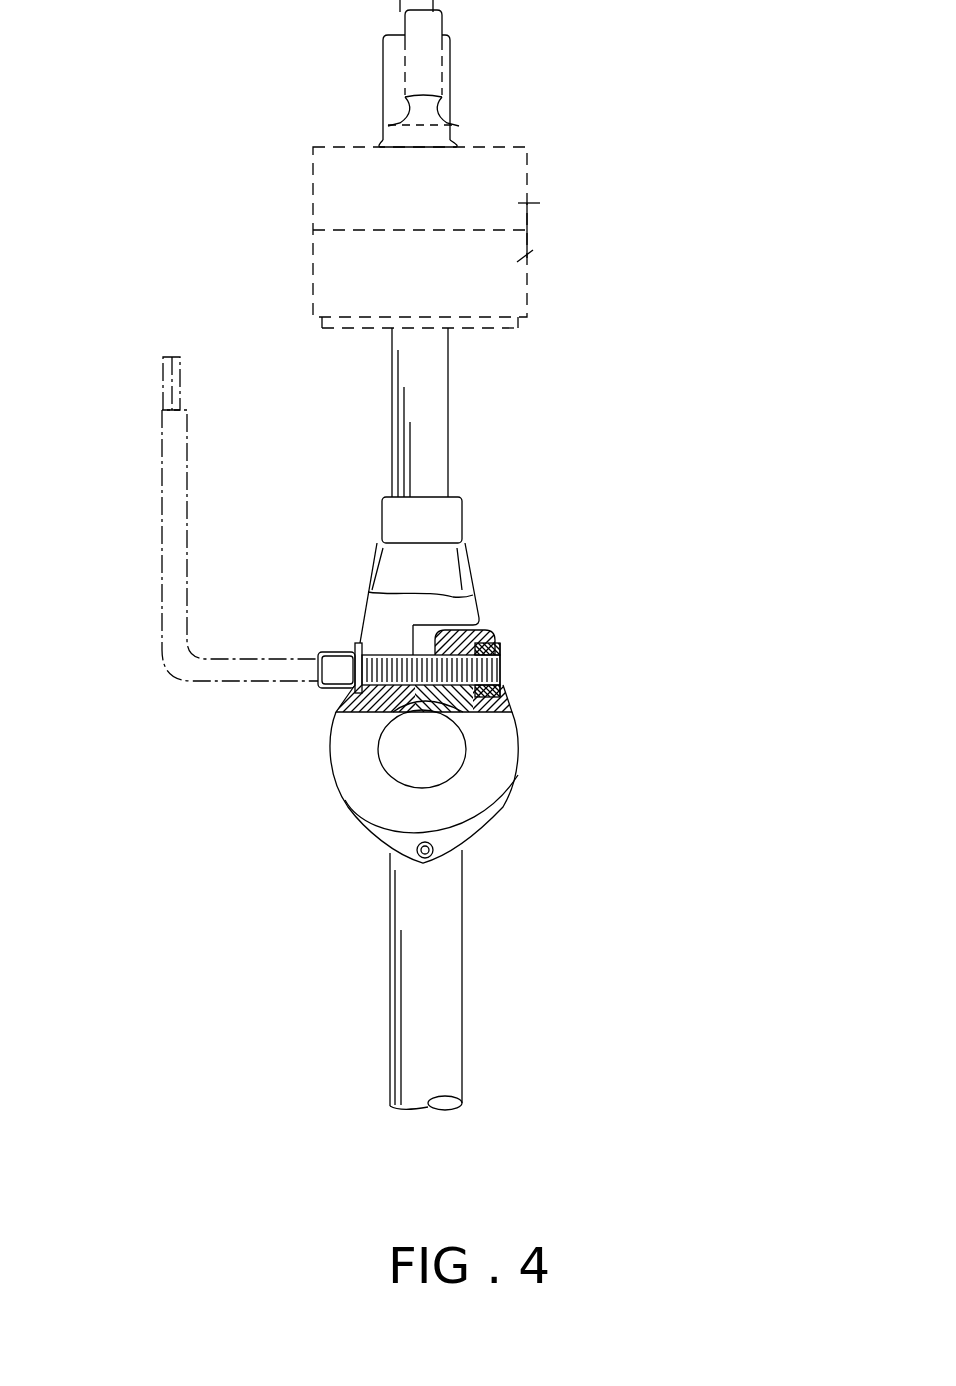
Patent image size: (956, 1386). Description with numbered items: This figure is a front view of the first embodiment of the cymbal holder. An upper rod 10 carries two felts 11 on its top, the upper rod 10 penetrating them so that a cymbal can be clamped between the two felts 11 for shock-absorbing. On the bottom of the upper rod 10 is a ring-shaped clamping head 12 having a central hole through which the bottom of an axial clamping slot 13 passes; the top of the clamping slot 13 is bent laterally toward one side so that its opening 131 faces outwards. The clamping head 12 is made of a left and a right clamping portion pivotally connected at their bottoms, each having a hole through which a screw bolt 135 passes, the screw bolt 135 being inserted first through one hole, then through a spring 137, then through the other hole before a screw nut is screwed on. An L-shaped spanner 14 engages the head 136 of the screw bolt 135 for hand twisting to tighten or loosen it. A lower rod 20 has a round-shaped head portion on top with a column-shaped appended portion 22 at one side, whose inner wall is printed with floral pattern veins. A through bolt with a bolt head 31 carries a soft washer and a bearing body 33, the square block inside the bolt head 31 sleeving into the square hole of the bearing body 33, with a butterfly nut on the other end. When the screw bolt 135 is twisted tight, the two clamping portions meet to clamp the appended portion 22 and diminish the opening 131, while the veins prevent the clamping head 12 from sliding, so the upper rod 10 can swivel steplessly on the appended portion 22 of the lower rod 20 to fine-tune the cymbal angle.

The upper rod 10 is at (435, 390).
The felts 11 is at (535, 205).
The clamping head 12 is at (477, 600).
The clamping slot 13 is at (428, 648).
The opening 131 is at (470, 628).
The screw bolt 135 is at (500, 648).
The head 136 is at (332, 688).
The spring 137 is at (412, 652).
The L-shaped spanner 14 is at (170, 472).
The lower rod 20 is at (450, 952).
The appended portion 22 is at (440, 715).
The bolt head 31 is at (393, 758).
The bearing body 33 is at (390, 810).